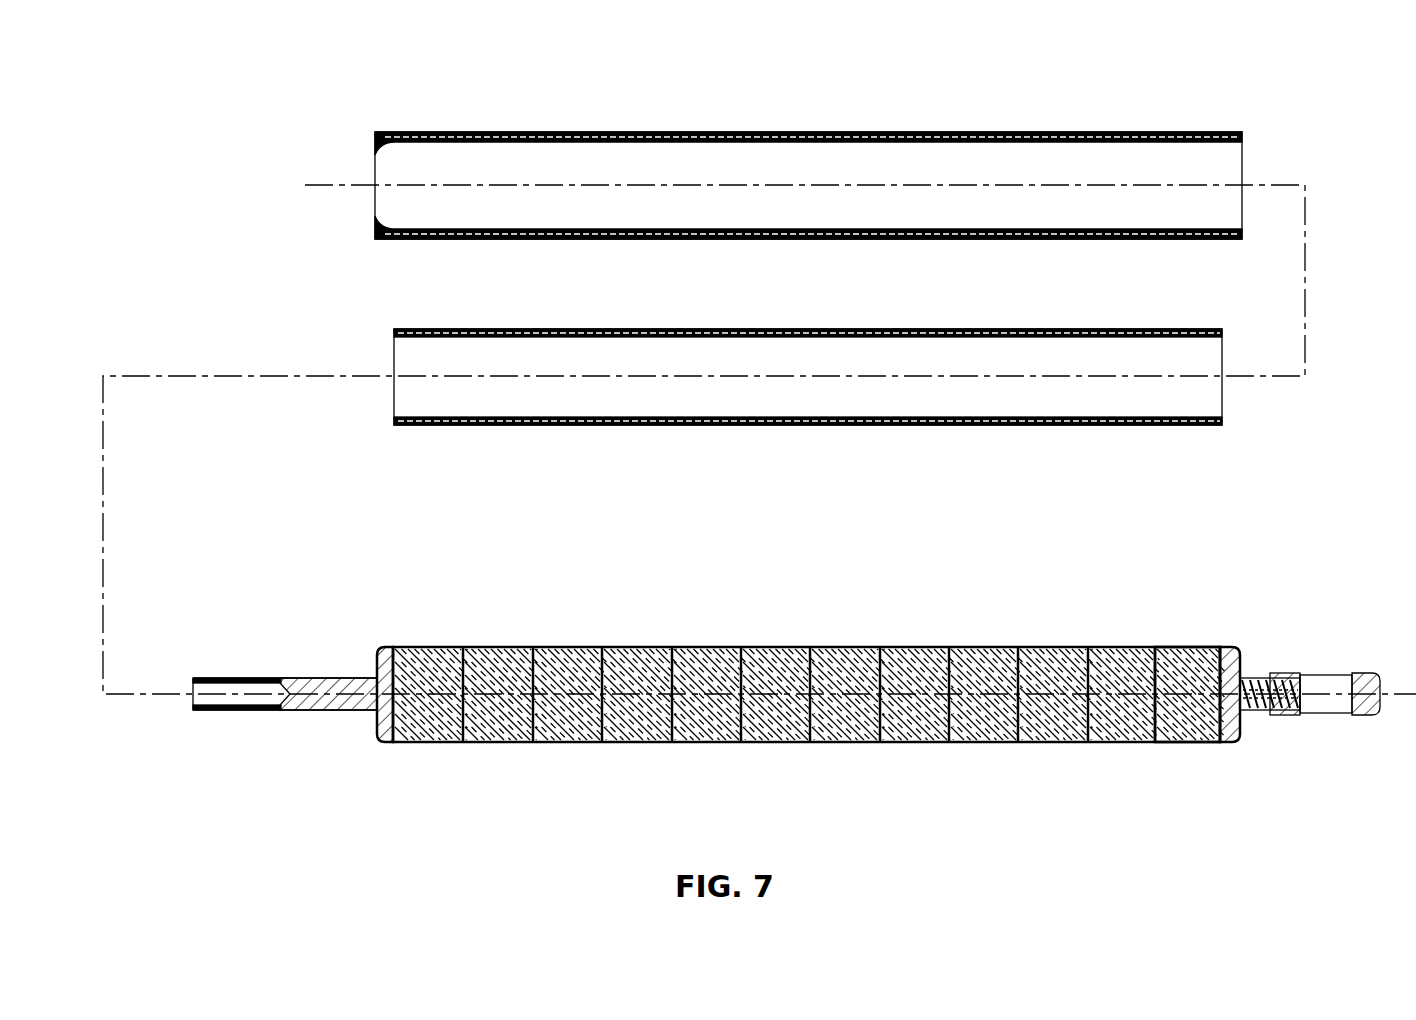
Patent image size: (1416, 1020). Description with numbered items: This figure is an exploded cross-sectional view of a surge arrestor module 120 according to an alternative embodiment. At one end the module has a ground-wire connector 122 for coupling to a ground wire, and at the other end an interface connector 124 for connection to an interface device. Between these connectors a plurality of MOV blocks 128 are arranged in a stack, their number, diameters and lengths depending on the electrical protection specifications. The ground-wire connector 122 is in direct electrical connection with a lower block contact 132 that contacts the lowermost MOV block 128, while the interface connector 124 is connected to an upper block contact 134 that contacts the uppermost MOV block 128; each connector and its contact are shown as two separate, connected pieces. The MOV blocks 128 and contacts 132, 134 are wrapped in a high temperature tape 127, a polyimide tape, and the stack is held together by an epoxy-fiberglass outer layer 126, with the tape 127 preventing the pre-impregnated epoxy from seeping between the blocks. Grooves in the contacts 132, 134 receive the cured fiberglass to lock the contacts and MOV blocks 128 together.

The surge arrestor module 120 is at (177, 73).
The ground-wire connector 122 is at (266, 652).
The interface connector 124 is at (1295, 632).
The epoxy-fiberglass outer layer 126 is at (375, 112).
The high temperature tape 127 is at (385, 307).
The MOV blocks 128 is at (1180, 686).
The lower block contact 132 is at (378, 660).
The upper block contact 134 is at (1240, 728).